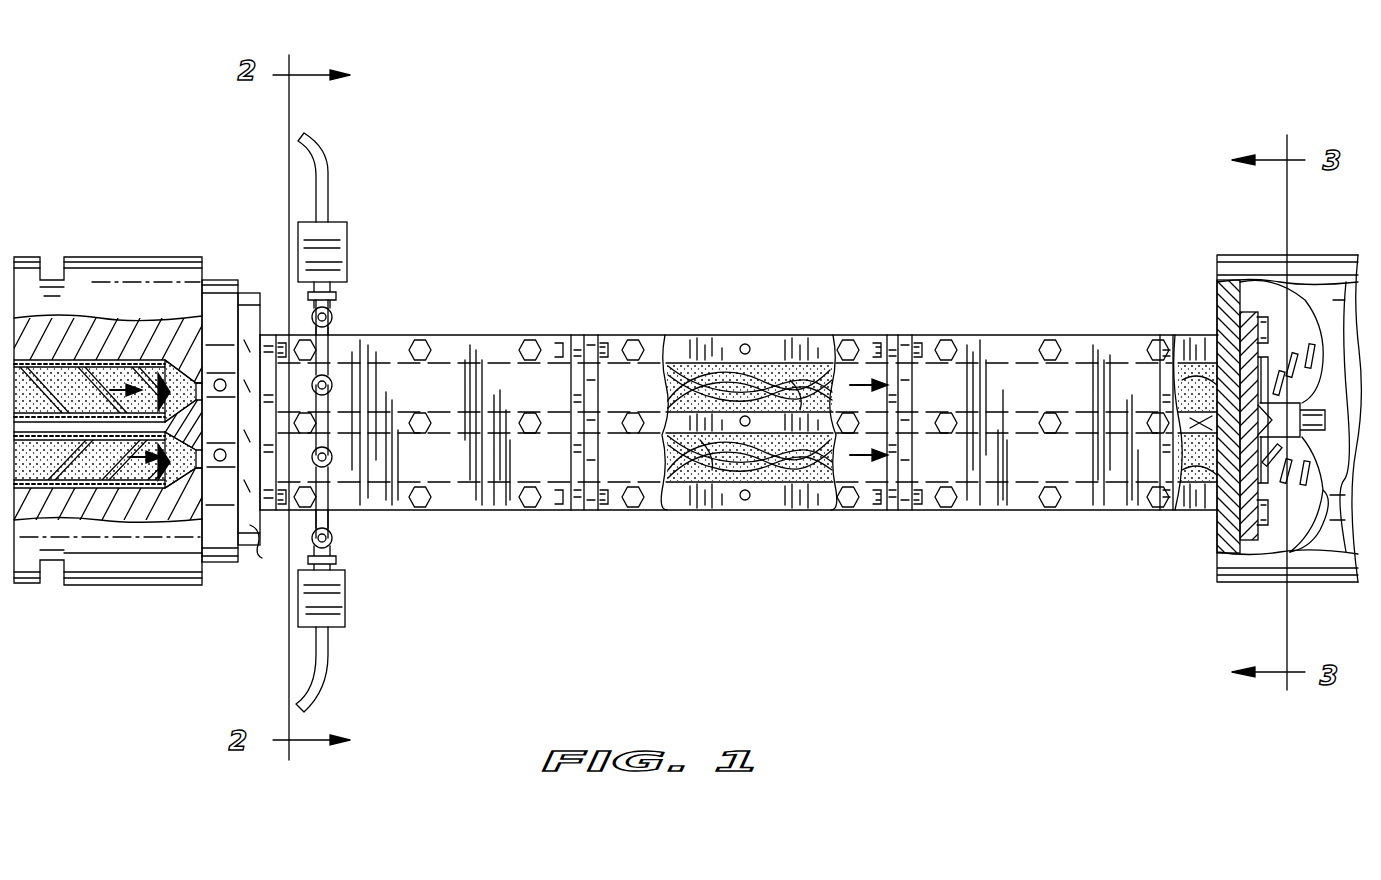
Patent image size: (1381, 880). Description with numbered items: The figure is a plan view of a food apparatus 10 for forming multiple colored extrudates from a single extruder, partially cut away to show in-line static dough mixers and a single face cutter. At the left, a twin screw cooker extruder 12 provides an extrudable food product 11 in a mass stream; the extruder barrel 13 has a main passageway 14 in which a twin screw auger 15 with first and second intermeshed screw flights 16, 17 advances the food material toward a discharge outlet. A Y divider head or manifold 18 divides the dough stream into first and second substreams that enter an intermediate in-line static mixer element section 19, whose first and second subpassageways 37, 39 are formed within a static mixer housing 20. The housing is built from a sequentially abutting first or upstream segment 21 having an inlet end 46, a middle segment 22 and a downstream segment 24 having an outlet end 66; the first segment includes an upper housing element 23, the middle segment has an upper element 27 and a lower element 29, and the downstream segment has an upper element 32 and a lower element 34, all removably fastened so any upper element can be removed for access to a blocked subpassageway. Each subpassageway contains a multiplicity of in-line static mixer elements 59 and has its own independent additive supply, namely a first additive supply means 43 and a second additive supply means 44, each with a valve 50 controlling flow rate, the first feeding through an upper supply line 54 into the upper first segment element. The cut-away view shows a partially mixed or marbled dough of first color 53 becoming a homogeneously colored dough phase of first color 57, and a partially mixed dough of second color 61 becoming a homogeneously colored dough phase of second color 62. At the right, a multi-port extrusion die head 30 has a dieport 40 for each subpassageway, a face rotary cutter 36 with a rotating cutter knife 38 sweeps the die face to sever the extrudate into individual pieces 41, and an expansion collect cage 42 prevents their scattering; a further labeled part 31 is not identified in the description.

The food apparatus 10 is at (830, 250).
The extrudable food product 11 is at (218, 345).
The extruder 12 is at (85, 250).
The extruder barrel 13 is at (128, 330).
The main passageway 14 is at (140, 490).
The twin screw auger 15 is at (150, 345).
The first screw intermeshed flight 16 is at (95, 358).
The second screw intermeshed flight 17 is at (88, 500).
The Y divider head or manifold 18 is at (224, 560).
The intermediate in-line static mixer element section 19 is at (622, 512).
The static mixer housing 20 is at (520, 512).
The first or upstream segment 21 is at (512, 333).
The second or middle segment 22 is at (625, 333).
The upper housing element 23 is at (435, 372).
The third or downstream segment 24 is at (1005, 333).
The upper element 27 is at (862, 372).
The lower element 29 is at (745, 510).
The multi-port extrusion die head 30 is at (1222, 552).
The die body 31 is at (1282, 335).
The upper element 32 is at (1085, 335).
The lower element 34 is at (1210, 340).
The face rotary cutter 36 is at (1358, 340).
The first subpassageway 37 is at (746, 385).
The rotating cutter knife 38 is at (1233, 522).
The second subpassageway 39 is at (683, 490).
The dieport 40 is at (1300, 395).
The individual pieces 41 is at (1330, 582).
The expansion collect cage 42 is at (1262, 582).
The first color, flavor, or additive supply means 43 is at (330, 170).
The second color, flavor, or additive supply means 44 is at (322, 680).
The inlet end 46 is at (262, 555).
The valve 50 is at (347, 258).
The partially mixed or marbled dough of first color 53 is at (730, 380).
The upper supply line 54 is at (342, 352).
The homogeneously colored dough phase of first color 57 is at (1200, 372).
The in-line static mixer elements 59 is at (812, 385).
The partially mixed dough phase of second color 61 is at (790, 490).
The homogeneously colored dough phase of second color 62 is at (1185, 465).
The outlet end 66 is at (1213, 510).